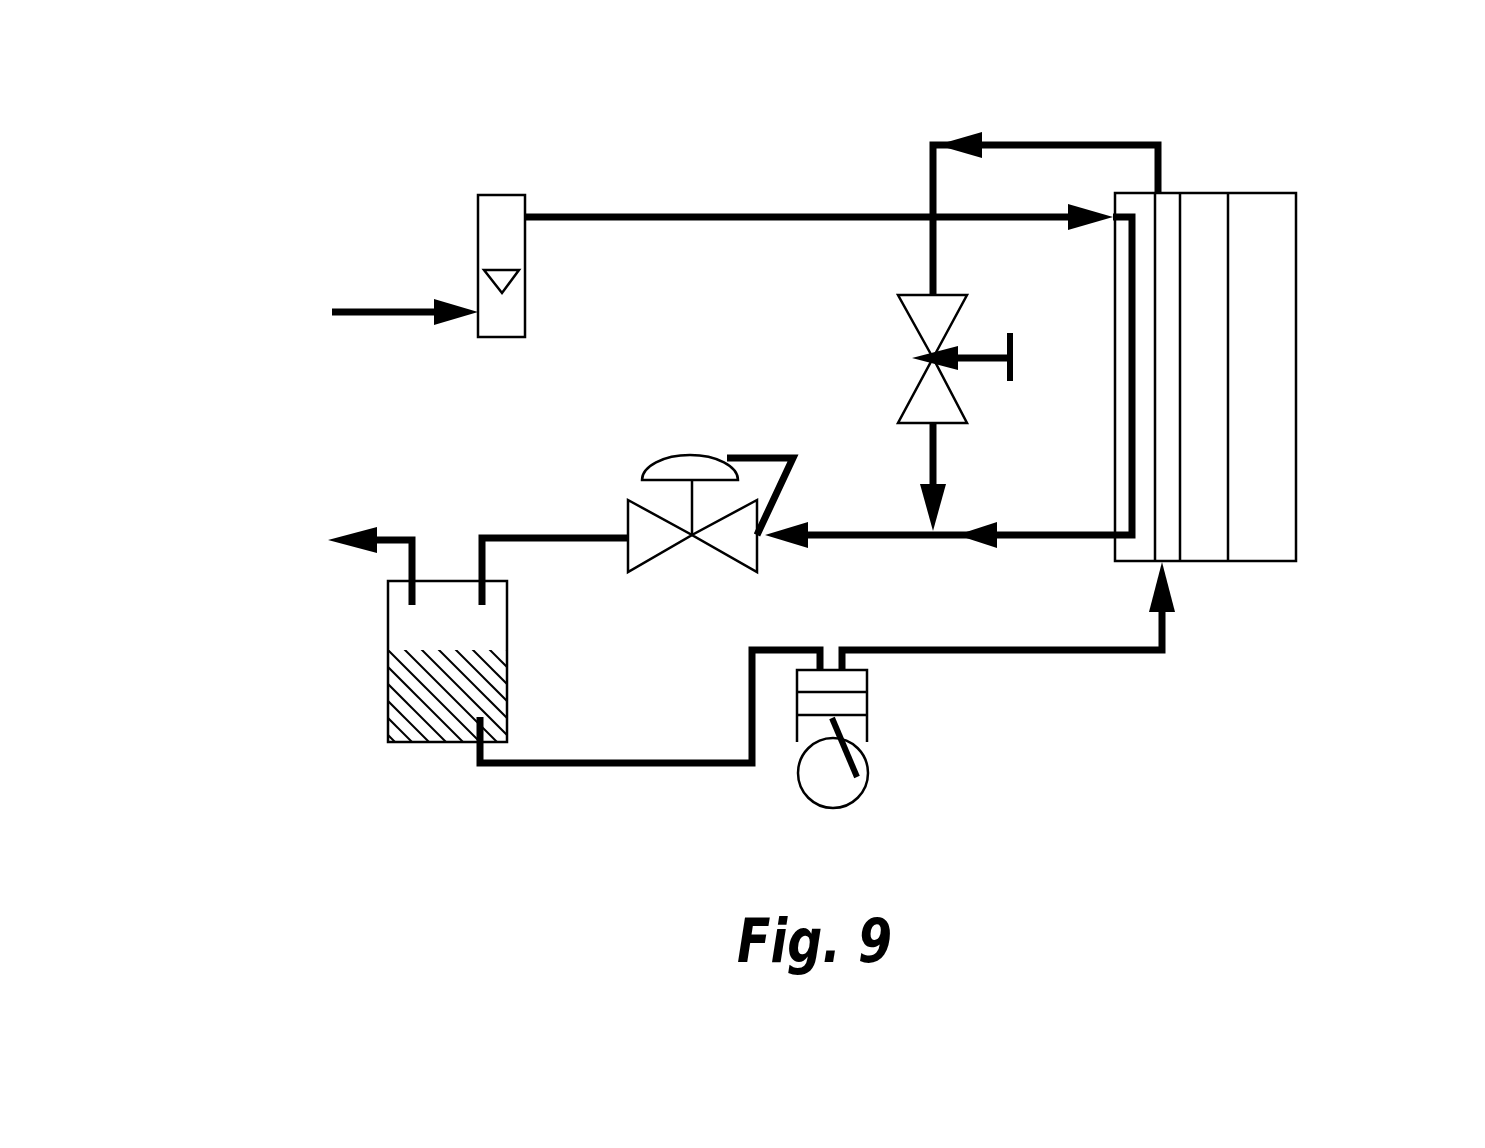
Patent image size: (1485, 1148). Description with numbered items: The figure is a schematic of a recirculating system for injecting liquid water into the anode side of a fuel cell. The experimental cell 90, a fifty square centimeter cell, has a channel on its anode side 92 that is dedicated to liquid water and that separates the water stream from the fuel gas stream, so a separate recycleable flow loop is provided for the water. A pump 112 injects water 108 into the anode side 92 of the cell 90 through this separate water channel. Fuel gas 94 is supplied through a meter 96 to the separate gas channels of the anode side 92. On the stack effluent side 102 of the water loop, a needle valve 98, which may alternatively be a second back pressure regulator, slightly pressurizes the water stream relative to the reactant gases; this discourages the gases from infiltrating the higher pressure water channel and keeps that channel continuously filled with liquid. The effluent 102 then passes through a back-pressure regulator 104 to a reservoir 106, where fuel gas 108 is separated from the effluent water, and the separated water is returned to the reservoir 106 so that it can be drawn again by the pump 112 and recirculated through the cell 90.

The experimental cell 90 is at (1318, 178).
The anode side 92 is at (1165, 203).
The fuel gas 94 is at (376, 312).
The meter 96 is at (507, 205).
The needle valve 98 is at (923, 400).
The stack effluent side 102 is at (851, 530).
The back-pressure regulator 104 is at (628, 510).
The reservoir 106 is at (388, 665).
The water 108 is at (683, 825).
The pump 112 is at (867, 727).